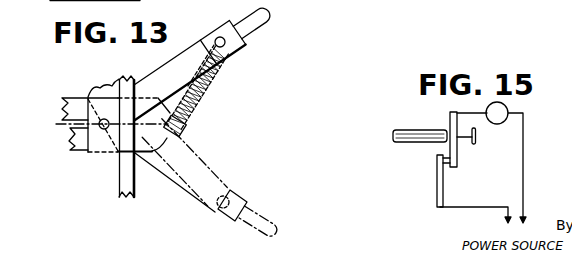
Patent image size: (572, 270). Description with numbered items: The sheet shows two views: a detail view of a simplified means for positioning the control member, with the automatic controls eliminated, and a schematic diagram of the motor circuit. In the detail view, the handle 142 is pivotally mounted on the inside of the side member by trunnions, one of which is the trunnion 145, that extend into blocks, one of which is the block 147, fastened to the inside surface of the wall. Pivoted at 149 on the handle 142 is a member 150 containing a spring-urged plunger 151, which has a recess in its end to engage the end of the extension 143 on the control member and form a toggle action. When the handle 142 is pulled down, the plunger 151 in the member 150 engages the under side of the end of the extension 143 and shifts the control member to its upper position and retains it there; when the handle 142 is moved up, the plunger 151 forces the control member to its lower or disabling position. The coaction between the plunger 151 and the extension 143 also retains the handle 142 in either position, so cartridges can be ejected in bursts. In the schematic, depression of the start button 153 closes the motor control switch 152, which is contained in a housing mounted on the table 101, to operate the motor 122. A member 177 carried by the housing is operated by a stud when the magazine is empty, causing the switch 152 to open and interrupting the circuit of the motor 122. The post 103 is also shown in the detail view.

In FIG. 13, the table 101 is at (86, 92).
In FIG. 13, the post 103 is at (125, 78).
In FIG. 13, the trunnion 145 is at (76, 116).
In FIG. 13, the block 147 is at (90, 142).
In FIG. 13, the handle 142 is at (192, 50).
In FIG. 13, the pivot 149 is at (226, 44).
In FIG. 13, the member 150 is at (229, 64).
In FIG. 13, the spring-urged plunger 151 is at (187, 126).
In FIG. 13, the extension 143 is at (151, 160).
In FIG. 15, the member 177 is at (416, 130).
In FIG. 15, the motor control switch 152 is at (440, 153).
In FIG. 15, the start button 153 is at (486, 140).
In FIG. 15, the motor 122 is at (505, 120).